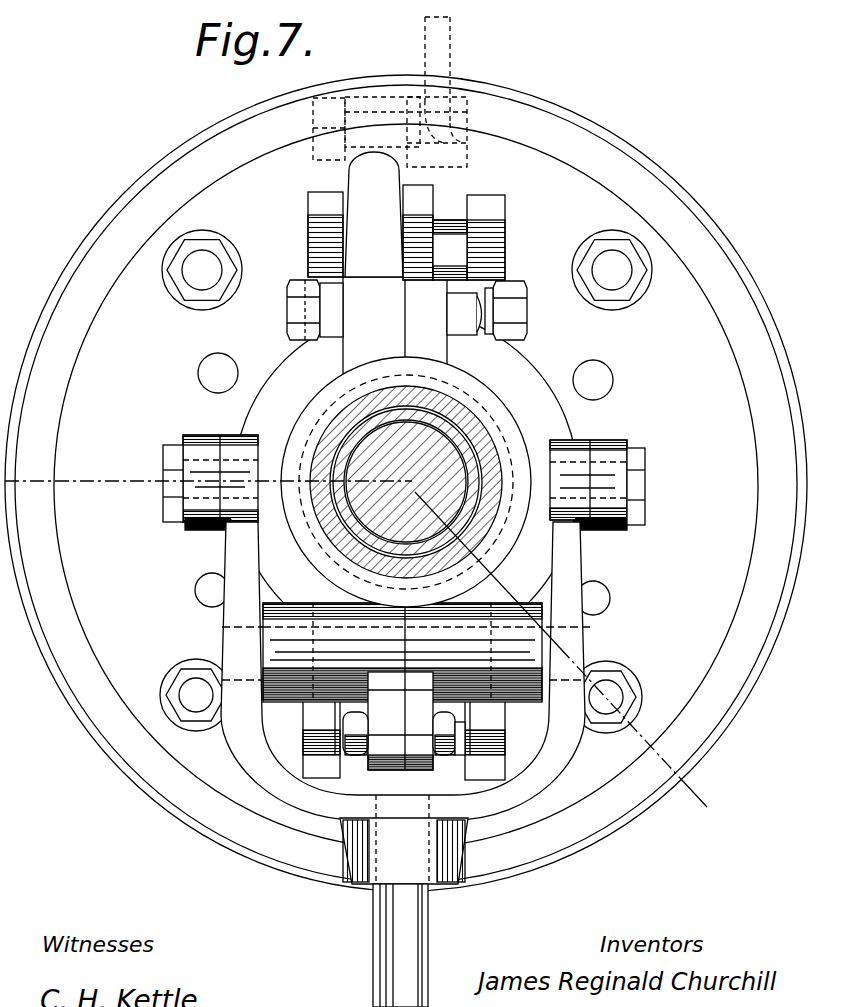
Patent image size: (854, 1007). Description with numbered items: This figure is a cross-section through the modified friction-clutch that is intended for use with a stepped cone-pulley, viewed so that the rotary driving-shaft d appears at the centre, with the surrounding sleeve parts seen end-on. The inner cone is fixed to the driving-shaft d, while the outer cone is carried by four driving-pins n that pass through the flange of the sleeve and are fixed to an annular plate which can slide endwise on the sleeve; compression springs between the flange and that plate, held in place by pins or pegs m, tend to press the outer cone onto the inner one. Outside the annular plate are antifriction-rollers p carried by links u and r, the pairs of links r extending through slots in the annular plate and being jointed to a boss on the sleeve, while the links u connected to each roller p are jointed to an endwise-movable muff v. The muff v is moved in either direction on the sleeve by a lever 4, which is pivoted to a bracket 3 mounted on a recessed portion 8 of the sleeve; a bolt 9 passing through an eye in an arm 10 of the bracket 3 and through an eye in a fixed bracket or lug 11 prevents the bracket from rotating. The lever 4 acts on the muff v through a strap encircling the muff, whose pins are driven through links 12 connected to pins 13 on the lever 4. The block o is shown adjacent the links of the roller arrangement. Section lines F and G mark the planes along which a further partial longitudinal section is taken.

The bracket 3 is at (402, 433).
The lever 4 is at (470, 860).
The recessed portion 8 is at (326, 420).
The bolt 9 is at (313, 124).
The arm 10 is at (374, 214).
The fixed bracket or lug 11 is at (452, 33).
The links 12 is at (208, 528).
The pins 13 is at (165, 495).
The links r is at (404, 485).
The block o is at (418, 232).
The antifriction-rollers p is at (418, 247).
The links u is at (450, 250).
The driving-pins n is at (406, 481).
The pins or pegs m is at (200, 368).
The rotary driving-shaft d is at (406, 482).
The muff v is at (406, 482).
The section line G G is at (208, 470).
The section line F F is at (567, 646).